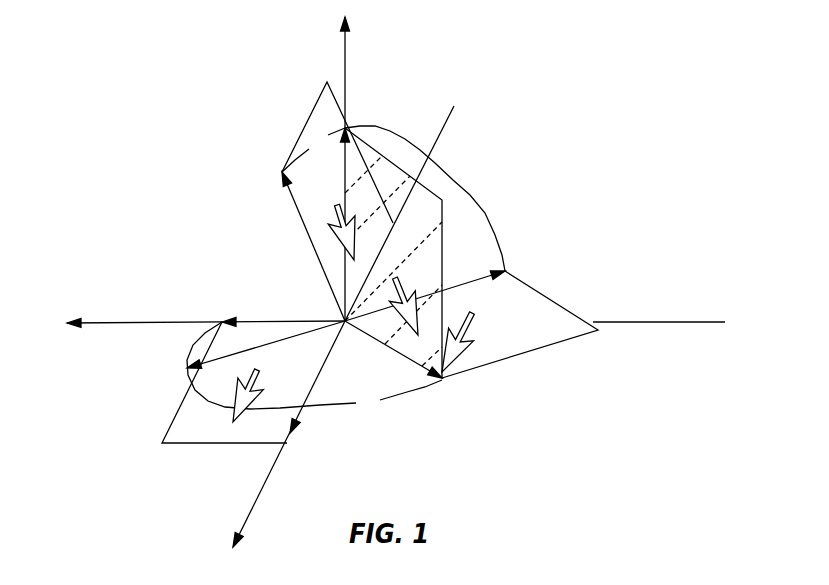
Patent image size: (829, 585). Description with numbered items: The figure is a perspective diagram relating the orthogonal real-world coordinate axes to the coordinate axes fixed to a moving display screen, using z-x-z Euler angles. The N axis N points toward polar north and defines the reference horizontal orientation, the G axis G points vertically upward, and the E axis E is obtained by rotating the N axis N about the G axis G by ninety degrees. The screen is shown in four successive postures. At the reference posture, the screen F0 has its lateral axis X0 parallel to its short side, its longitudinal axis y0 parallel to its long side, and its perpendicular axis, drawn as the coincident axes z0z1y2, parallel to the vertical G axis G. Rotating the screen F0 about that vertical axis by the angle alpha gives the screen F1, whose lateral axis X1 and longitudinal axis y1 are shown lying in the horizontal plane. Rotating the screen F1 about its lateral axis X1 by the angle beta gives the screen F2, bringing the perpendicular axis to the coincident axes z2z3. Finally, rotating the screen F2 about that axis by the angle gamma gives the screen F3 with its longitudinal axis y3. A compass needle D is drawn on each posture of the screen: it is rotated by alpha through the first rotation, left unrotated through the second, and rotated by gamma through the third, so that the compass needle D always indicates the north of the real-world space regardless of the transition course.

The E axis E is at (396, 311).
The G axis G is at (353, 167).
The N axis N is at (289, 443).
The y1 axis y1 is at (438, 284).
The x1 axis X1 is at (405, 365).
The x0 axis X0 is at (234, 310).
The z2 and z3 axes z2z3 is at (240, 354).
The y0 axis y0 is at (303, 440).
The y3 axis y3 is at (301, 243).
The z0, z1 and y2 axes z0z1y2 is at (379, 119).
The screen F3 is at (315, 105).
The screen F2 is at (443, 265).
The screen F1 is at (543, 348).
The screen F0 is at (186, 445).
The Euler angle gamma is at (313, 150).
The Euler angle beta is at (425, 198).
The Euler angle alpha is at (314, 367).
The compass needle D is at (347, 243).